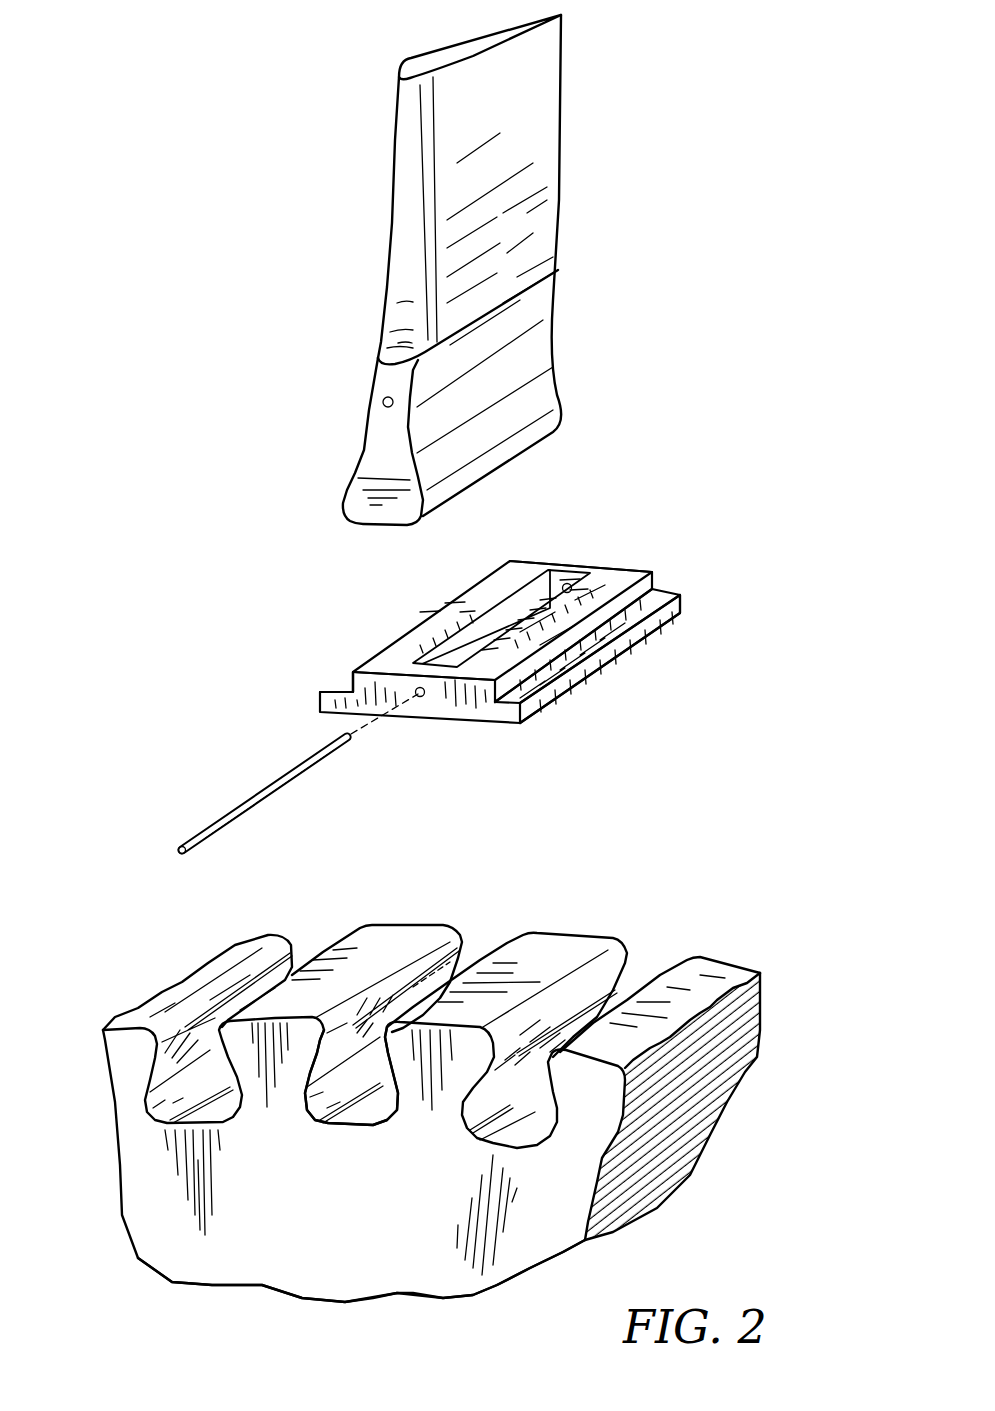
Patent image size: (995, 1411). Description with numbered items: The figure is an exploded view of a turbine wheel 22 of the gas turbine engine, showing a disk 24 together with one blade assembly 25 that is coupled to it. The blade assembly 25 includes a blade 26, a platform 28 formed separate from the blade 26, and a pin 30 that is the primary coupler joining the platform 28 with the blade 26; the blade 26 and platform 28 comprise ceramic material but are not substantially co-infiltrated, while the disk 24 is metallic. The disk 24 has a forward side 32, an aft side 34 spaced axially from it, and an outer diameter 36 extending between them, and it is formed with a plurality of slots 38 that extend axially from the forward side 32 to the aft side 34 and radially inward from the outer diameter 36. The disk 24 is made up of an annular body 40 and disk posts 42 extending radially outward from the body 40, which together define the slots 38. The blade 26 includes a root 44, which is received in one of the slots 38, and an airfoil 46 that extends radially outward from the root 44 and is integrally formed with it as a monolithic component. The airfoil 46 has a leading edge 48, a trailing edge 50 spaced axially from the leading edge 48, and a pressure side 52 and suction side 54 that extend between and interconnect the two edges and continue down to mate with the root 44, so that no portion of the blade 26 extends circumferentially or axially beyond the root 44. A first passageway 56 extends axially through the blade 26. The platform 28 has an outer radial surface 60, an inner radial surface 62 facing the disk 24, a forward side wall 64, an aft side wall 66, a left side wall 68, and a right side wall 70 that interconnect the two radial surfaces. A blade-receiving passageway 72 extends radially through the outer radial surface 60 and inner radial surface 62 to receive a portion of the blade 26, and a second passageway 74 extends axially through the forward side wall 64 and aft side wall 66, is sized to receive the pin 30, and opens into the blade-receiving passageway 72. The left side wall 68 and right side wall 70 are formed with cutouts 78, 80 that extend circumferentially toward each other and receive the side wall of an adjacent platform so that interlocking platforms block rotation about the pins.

The turbine wheel 22 is at (208, 151).
The disk 24 is at (103, 1152).
The blade assembly 25 is at (135, 664).
The blade 26 is at (572, 330).
The platform 28 is at (667, 558).
The pin 30 is at (243, 801).
The forward side 32 is at (435, 1197).
The aft side 34 is at (462, 945).
The outer diameter 36 is at (558, 960).
The slots 38 is at (357, 1103).
The annular body 40 is at (257, 1261).
The disk posts 42 is at (635, 960).
The root 44 is at (341, 480).
The airfoil 46 is at (385, 288).
The leading edge 48 is at (391, 228).
The trailing edge 50 is at (563, 110).
The pressure side 52 is at (527, 183).
The suction side 54 is at (452, 167).
The first passageway 56 is at (375, 402).
The outer radial surface 60 is at (390, 655).
The inner radial surface 62 is at (480, 707).
The forward side wall 64 is at (470, 708).
The aft side wall 66 is at (613, 583).
The left side wall 68 is at (322, 700).
The right side wall 70 is at (600, 660).
The blade-receiving passageway 72 is at (487, 636).
The second passageway 74 is at (417, 697).
The cutout 78 is at (350, 667).
The cutout 80 is at (552, 672).